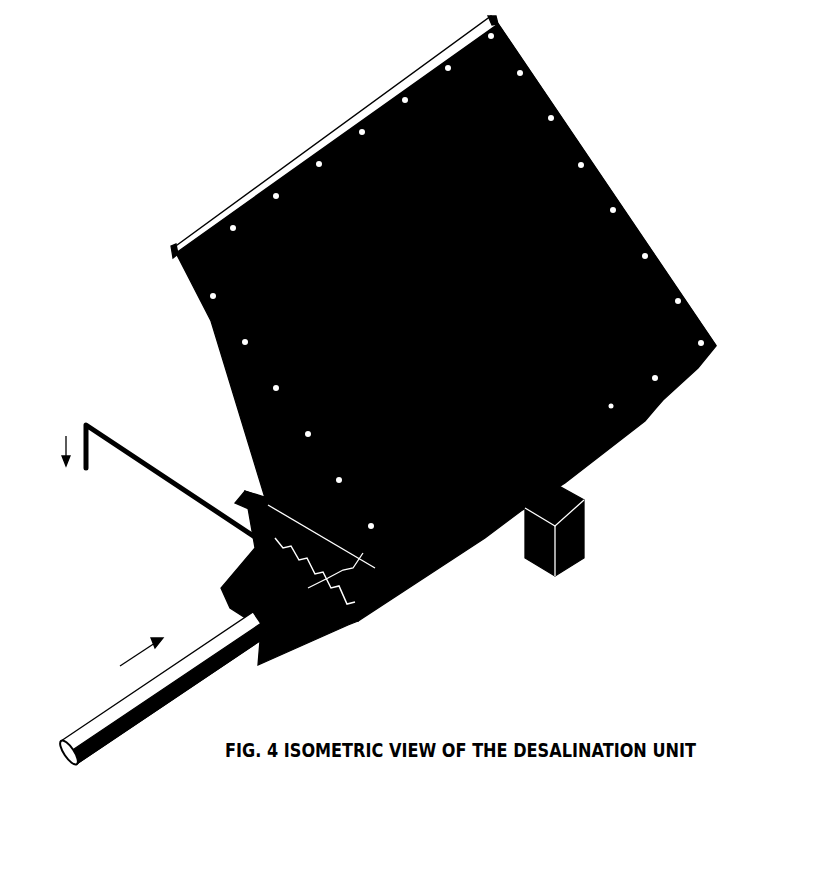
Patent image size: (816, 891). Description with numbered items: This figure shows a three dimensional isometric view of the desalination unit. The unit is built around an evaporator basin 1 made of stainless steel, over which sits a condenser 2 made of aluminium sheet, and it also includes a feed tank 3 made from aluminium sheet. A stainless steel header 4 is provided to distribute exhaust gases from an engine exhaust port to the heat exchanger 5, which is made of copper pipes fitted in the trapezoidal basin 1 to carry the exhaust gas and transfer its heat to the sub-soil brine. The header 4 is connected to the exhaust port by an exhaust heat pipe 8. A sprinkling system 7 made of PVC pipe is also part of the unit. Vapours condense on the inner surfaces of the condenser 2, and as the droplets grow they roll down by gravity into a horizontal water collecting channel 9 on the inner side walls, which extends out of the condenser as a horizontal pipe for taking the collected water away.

The evaporator basin 1 is at (446, 330).
The condenser 2 is at (607, 185).
The feed tank 3 is at (593, 543).
The header 4 is at (261, 578).
The heat exchanger 5 is at (341, 608).
The sprinkling system 7 is at (334, 137).
The exhaust heat pipe 8 is at (160, 689).
The water collecting channel 9 is at (95, 423).